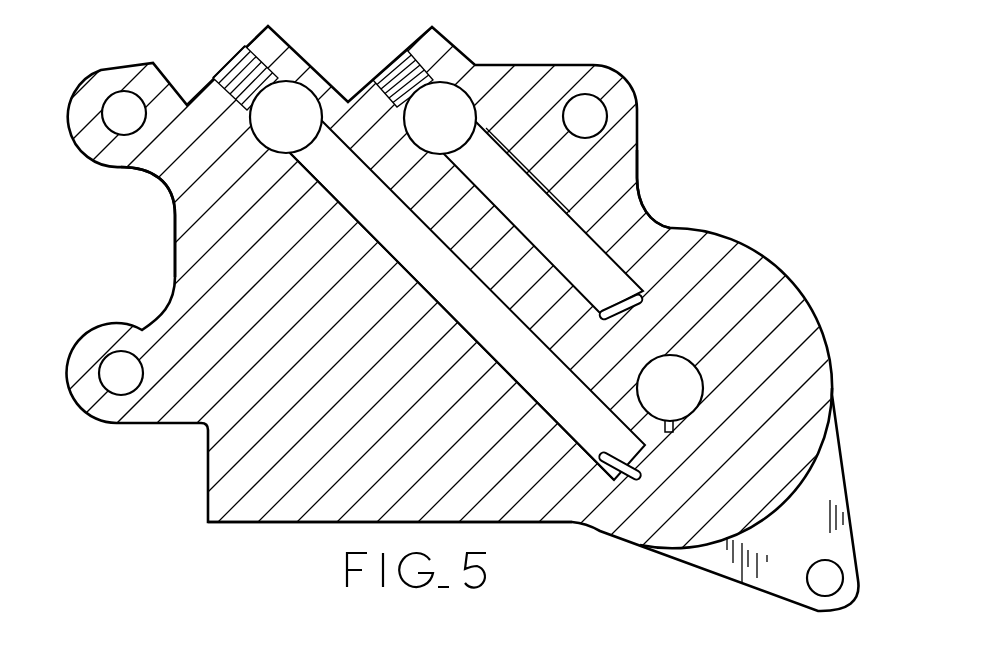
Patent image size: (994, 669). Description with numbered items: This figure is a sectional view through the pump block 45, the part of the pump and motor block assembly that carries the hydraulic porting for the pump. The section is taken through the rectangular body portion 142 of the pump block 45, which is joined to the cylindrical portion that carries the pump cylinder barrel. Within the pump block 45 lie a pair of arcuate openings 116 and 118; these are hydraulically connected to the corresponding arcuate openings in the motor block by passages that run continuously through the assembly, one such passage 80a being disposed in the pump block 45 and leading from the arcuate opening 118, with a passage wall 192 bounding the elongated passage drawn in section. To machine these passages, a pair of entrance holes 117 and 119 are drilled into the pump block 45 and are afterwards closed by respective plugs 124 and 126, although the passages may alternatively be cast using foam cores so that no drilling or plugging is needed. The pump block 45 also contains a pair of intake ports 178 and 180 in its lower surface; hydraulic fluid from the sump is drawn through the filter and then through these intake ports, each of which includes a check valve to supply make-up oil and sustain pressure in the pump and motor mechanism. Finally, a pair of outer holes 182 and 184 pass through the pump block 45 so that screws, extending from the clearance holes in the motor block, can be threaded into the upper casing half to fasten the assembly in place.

The pump block 45 is at (676, 76).
The passage 80a is at (638, 182).
The arcuate opening 116 is at (597, 474).
The entrance hole 117 is at (244, 55).
The arcuate opening 118 is at (697, 231).
The entrance hole 119 is at (408, 58).
The plug 124 is at (262, 118).
The plug 126 is at (393, 82).
The rectangular body portion 142 is at (292, 498).
The intake port 178 is at (170, 178).
The intake port 180 is at (462, 106).
The outer hole 182 is at (110, 100).
The outer hole 184 is at (594, 105).
The passage wall 192 is at (318, 162).